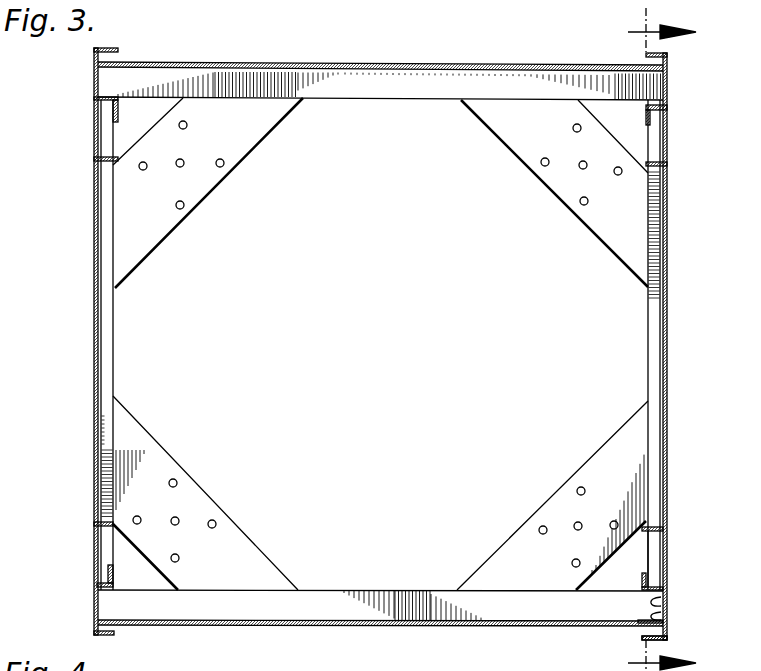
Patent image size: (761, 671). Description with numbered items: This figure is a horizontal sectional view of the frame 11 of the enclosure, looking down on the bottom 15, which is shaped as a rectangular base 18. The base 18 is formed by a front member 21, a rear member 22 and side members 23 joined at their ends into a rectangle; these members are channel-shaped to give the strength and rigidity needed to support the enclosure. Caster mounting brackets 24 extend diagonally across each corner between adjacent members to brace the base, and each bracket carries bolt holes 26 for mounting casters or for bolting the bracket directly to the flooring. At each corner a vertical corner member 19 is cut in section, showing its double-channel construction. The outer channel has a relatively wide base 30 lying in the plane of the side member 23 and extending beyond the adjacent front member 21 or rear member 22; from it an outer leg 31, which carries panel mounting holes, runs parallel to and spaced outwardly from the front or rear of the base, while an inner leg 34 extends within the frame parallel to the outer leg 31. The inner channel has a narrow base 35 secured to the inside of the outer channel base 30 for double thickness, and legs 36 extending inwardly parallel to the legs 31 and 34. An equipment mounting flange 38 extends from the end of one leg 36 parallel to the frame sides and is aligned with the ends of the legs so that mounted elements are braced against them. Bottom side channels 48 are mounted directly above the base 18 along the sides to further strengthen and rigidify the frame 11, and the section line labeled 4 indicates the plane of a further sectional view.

The frame 11 is at (376, 51).
The bottom 15 is at (395, 323).
The rectangular base 18 is at (301, 100).
The vertical corner members 19 is at (667, 114).
The front member 21 is at (396, 610).
The rear member 22 is at (334, 88).
The side members 23 is at (94, 342).
The caster mounting brackets 24 is at (205, 173).
The bolt holes 26 is at (182, 209).
The base of outer channel 30 is at (664, 557).
The outer leg 31 is at (666, 642).
The inner leg 34 is at (652, 528).
The narrow base 35 is at (650, 600).
The legs 36 is at (644, 586).
The equipment mounting flange 38 is at (640, 582).
The bottom side channels 48 is at (107, 351).
The section line 4- 4 is at (650, 339).